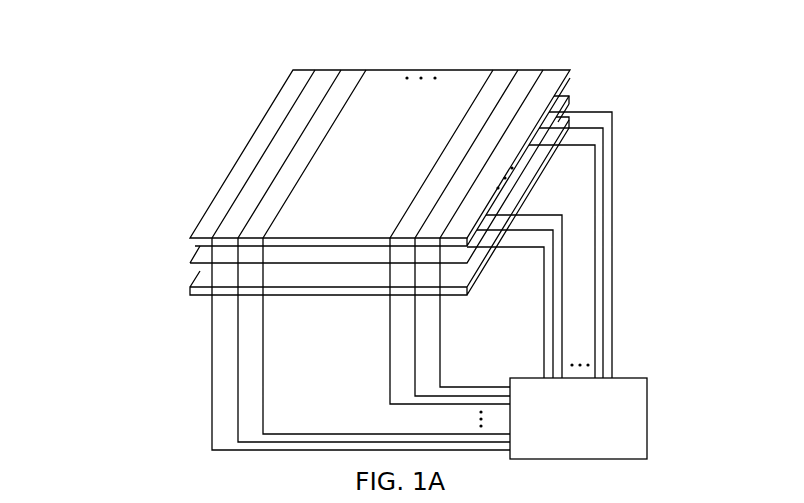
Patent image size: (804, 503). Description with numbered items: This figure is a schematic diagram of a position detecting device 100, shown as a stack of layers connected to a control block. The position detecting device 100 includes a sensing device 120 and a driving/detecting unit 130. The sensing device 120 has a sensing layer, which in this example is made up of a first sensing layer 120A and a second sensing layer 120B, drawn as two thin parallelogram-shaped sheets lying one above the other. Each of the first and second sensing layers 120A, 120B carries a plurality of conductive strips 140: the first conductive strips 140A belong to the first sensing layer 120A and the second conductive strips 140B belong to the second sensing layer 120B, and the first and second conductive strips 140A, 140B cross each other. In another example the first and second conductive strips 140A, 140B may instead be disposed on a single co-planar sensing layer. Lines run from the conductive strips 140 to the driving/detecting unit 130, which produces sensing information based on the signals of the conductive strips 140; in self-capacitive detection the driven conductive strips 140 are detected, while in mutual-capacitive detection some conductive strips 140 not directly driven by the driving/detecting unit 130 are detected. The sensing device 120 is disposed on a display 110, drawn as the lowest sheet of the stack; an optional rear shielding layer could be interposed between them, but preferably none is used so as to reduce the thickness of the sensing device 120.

The position detecting device 100 is at (243, 82).
The display 110 is at (205, 275).
The sensing device 120 is at (98, 198).
The first sensing layer 120A is at (212, 232).
The second sensing layer 120B is at (202, 257).
The driving/detecting unit 130 is at (578, 419).
The conductive strips 140 is at (667, 35).
The first conductive strips 140A is at (548, 95).
The second conductive strips 140B is at (556, 117).